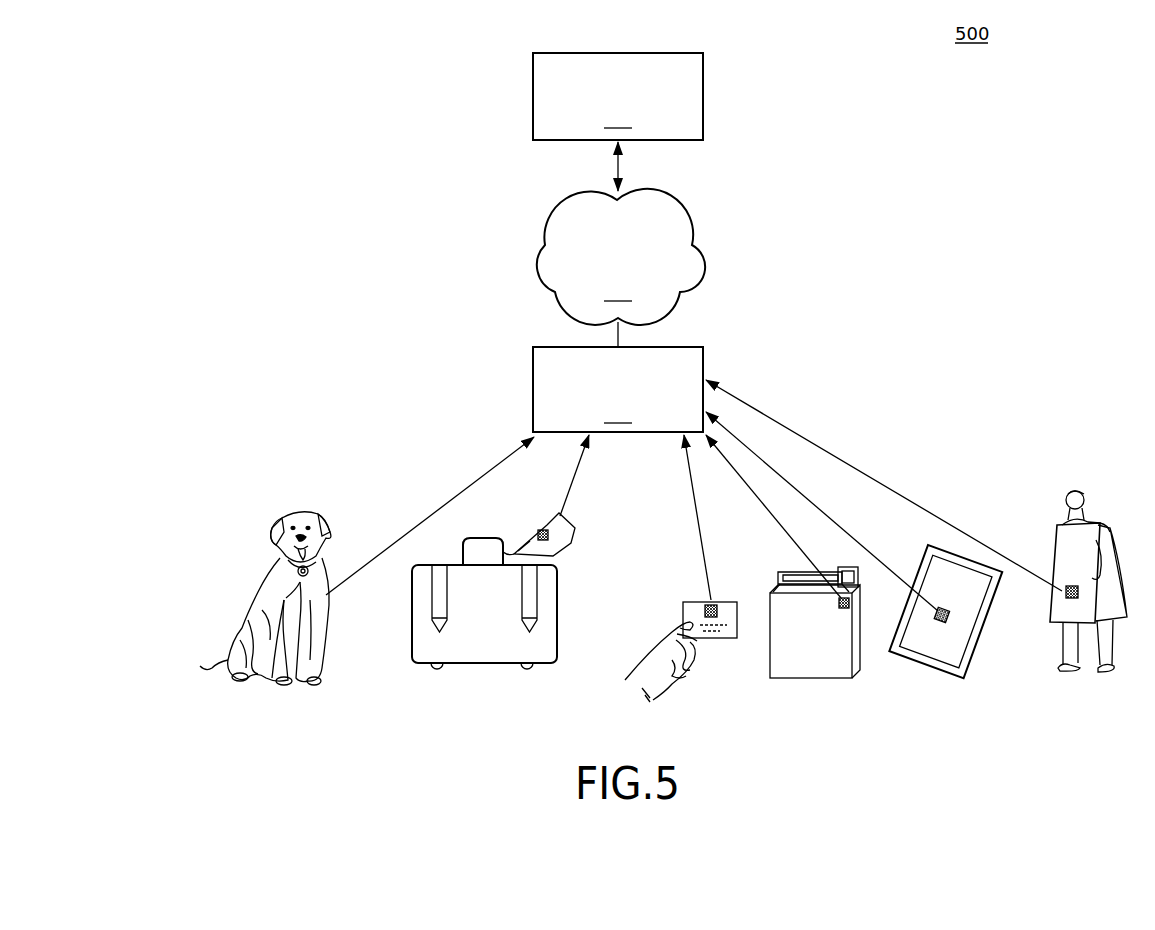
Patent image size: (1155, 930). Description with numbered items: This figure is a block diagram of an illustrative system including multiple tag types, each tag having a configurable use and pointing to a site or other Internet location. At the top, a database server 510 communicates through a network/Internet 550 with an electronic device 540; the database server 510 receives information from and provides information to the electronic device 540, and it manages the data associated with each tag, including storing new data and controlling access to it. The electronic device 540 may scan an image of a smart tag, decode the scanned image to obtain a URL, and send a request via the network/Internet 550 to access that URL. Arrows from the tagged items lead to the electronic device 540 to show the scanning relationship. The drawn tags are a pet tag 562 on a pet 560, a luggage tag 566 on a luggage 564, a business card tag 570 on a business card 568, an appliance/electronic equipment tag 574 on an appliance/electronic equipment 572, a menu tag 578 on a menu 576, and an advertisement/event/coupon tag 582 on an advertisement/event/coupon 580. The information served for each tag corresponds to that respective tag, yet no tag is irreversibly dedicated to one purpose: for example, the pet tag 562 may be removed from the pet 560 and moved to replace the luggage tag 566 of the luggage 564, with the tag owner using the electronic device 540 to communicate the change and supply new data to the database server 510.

The database server 510 is at (618, 96).
The network/Internet 550 is at (621, 257).
The electronic device 540 is at (618, 389).
The pet 560 is at (281, 515).
The pet tag 562 is at (322, 598).
The luggage 564 is at (557, 640).
The luggage tag 566 is at (556, 557).
The business card 568 is at (722, 640).
The business card tag 570 is at (714, 603).
The appliance/electronic equipment 572 is at (830, 680).
The appliance/electronic equipment tag 574 is at (850, 606).
The menu 576 is at (978, 637).
The menu tag 578 is at (942, 623).
The advertisement/event/coupon 580 is at (1070, 670).
The advertisement/event/coupon tag 582 is at (1047, 533).